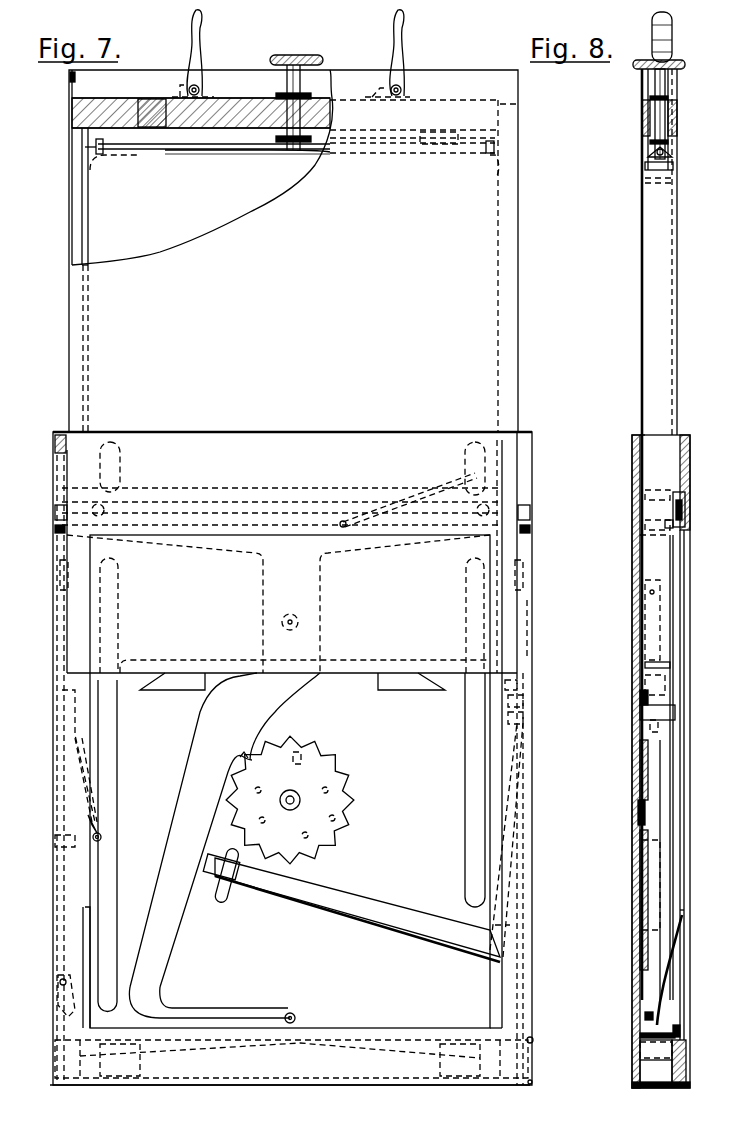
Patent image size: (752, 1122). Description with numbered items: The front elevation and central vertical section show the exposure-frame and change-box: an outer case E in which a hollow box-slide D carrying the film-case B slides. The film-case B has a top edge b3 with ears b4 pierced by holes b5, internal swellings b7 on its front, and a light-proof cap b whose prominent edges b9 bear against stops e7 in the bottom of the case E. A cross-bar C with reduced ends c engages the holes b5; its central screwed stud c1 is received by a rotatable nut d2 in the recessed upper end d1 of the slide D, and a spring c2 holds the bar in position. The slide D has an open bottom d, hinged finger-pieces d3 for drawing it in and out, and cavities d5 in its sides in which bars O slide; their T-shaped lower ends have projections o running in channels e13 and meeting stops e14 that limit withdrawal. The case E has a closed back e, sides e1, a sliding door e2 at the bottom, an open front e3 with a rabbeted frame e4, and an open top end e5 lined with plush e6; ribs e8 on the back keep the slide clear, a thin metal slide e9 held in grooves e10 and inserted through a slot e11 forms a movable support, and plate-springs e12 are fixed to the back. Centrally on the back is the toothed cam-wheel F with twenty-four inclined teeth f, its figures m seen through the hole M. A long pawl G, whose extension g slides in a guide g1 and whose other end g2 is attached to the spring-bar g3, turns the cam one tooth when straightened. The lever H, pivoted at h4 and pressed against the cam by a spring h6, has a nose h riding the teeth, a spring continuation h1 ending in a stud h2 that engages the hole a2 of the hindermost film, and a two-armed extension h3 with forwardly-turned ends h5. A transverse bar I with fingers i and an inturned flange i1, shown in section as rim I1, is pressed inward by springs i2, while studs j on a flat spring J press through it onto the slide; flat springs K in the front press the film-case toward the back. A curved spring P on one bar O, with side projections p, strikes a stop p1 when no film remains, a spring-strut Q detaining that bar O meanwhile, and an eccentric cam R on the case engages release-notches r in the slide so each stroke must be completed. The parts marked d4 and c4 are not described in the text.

In FIG. 7, the release-notches r is at (70, 78).
In FIG. 7, the finger-pieces d3 is at (203, 45).
In FIG. 8, the finger-pieces d3 is at (673, 42).
In FIG. 7, the rotatable nut d2 is at (285, 80).
In FIG. 7, the upper end of slide d1 is at (484, 89).
In FIG. 7, the longitudinal cavities d5 is at (80, 237).
In FIG. 7, the guide d4 is at (247, 666).
In FIG. 7, the open bottom d is at (357, 675).
In FIG. 7, the reduced ends c is at (94, 147).
In FIG. 7, the screwed stud c1 is at (318, 152).
In FIG. 7, the spring c2 is at (240, 158).
In FIG. 8, the rod c4 is at (680, 550).
In FIG. 7, the cross-bar C is at (290, 152).
In FIG. 8, the cross-bar C is at (678, 147).
In FIG. 7, the lid or cap b is at (291, 1059).
In FIG. 8, the lid or cap b is at (650, 1068).
In FIG. 7, the top edge of film-case b3 is at (188, 152).
In FIG. 7, the ears b4 is at (538, 140).
In FIG. 8, the ears b4 is at (645, 155).
In FIG. 8, the holes b5 is at (672, 152).
In FIG. 7, the internal swellings b7 is at (490, 172).
In FIG. 7, the edges of cap b9 is at (382, 1046).
In FIG. 8, the edges of cap b9 is at (640, 1052).
In FIG. 7, the film-case B is at (167, 213).
In FIG. 8, the film-case B is at (645, 255).
In FIG. 7, the hollow box-slide D is at (290, 285).
In FIG. 8, the hollow box-slide D is at (680, 255).
In FIG. 7, the eccentric cam R is at (56, 440).
In FIG. 7, the outer case E is at (533, 465).
In FIG. 8, the outer case E is at (690, 461).
In FIG. 7, the closed back e is at (290, 781).
In FIG. 8, the closed back e is at (634, 595).
In FIG. 7, the sides of case e1 is at (533, 613).
In FIG. 7, the sliding door e2 is at (277, 1087).
In FIG. 8, the sliding door e2 is at (662, 1089).
In FIG. 8, the open front e3 is at (690, 857).
In FIG. 7, the rabbeted frame e4 is at (426, 1032).
In FIG. 7, the top end e5 is at (310, 432).
In FIG. 8, the top end e5 is at (688, 435).
In FIG. 8, the plush lining e6 is at (710, 1028).
In FIG. 7, the stops e7 is at (462, 1050).
In FIG. 7, the ribs or strips e8 is at (116, 455).
In FIG. 7, the thin metal slide e9 is at (358, 1040).
In FIG. 8, the thin metal slide e9 is at (640, 1035).
In FIG. 8, the grooves e10 is at (688, 1048).
In FIG. 7, the slot e11 is at (533, 1038).
In FIG. 7, the flat plate-springs e12 is at (418, 700).
In FIG. 8, the flat plate-springs e12 is at (660, 692).
In FIG. 8, the grooves or channels e13 is at (668, 770).
In FIG. 7, the stops e14 is at (520, 705).
In FIG. 7, the transverse bar I is at (238, 492).
In FIG. 8, the flange or rim I1 is at (688, 528).
In FIG. 7, the fingers i is at (104, 508).
In FIG. 8, the fingers i is at (665, 540).
In FIG. 7, the flange or rim i1 is at (152, 530).
In FIG. 7, the springs i2 is at (543, 575).
In FIG. 7, the flat spring J is at (345, 503).
In FIG. 7, the studs j is at (488, 508).
In FIG. 8, the studs j is at (688, 512).
In FIG. 7, the nose h is at (240, 755).
In FIG. 7, the elbow and continuation h1 is at (222, 1012).
In FIG. 7, the stud h2 is at (296, 1015).
In FIG. 8, the stud h2 is at (650, 1010).
In FIG. 7, the two-armed upward extension h3 is at (282, 500).
In FIG. 7, the pivot h4 is at (290, 614).
In FIG. 7, the forwardly-turned ends h5 is at (548, 518).
In FIG. 8, the forwardly-turned ends h5 is at (648, 526).
In FIG. 7, the spring h6 is at (410, 487).
In FIG. 7, the lever H is at (275, 712).
In FIG. 7, the toothed cam-wheel F is at (352, 796).
In FIG. 8, the toothed cam-wheel F is at (645, 817).
In FIG. 7, the inclined teeth f is at (343, 764).
In FIG. 7, the hole M is at (300, 770).
In FIG. 7, the figures m is at (350, 826).
In FIG. 7, the long pawl G is at (362, 903).
In FIG. 7, the extension of pawl g is at (218, 880).
In FIG. 7, the guide g1 is at (232, 900).
In FIG. 7, the end of pawl g2 is at (402, 930).
In FIG. 7, the spring-bar g3 is at (512, 816).
In FIG. 8, the spring-bar g3 is at (650, 839).
In FIG. 7, the flat springs K is at (84, 933).
In FIG. 8, the flat springs K is at (668, 1001).
In FIG. 7, the bars O is at (512, 686).
In FIG. 8, the bars O is at (655, 699).
In FIG. 7, the projections o is at (520, 725).
In FIG. 8, the projections o is at (652, 736).
In FIG. 7, the inwardly-curved spring P is at (82, 783).
In FIG. 7, the side projections p is at (103, 838).
In FIG. 7, the stop p1 is at (100, 830).
In FIG. 7, the spring-strut Q is at (62, 993).
In FIG. 8, the holes in films a2 is at (672, 72).